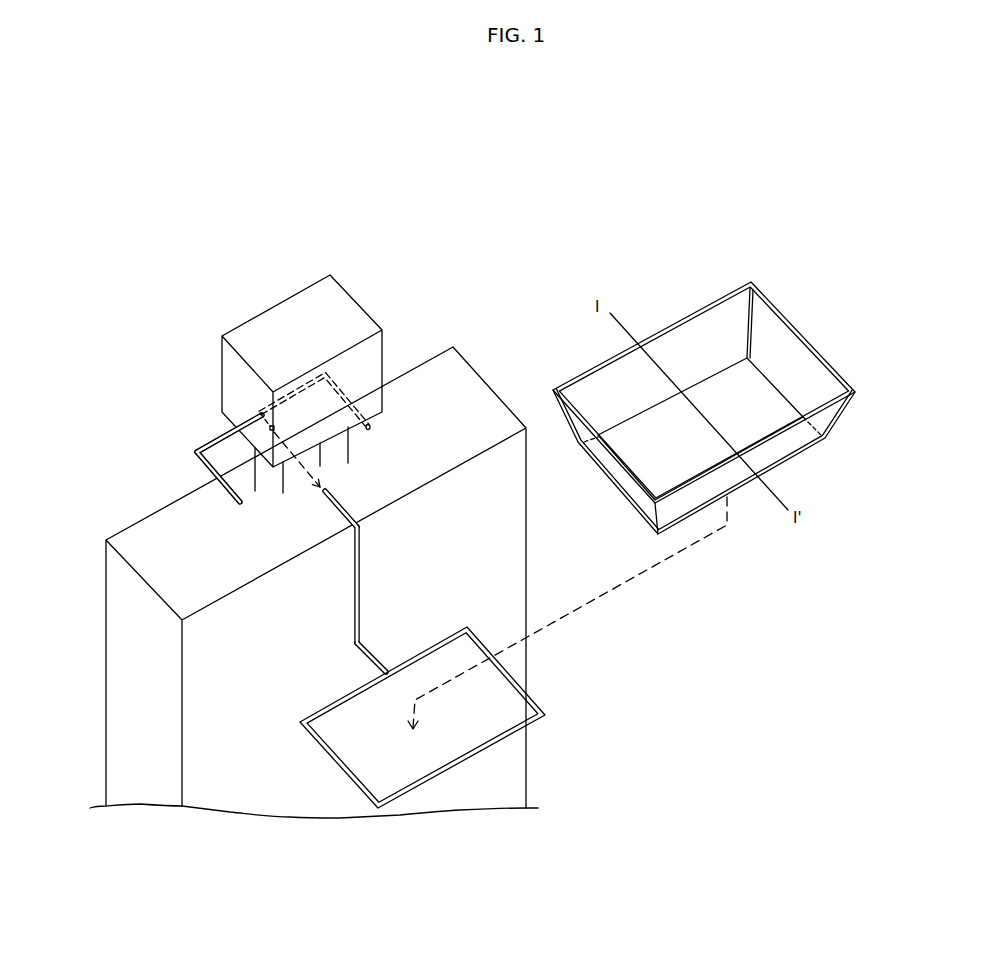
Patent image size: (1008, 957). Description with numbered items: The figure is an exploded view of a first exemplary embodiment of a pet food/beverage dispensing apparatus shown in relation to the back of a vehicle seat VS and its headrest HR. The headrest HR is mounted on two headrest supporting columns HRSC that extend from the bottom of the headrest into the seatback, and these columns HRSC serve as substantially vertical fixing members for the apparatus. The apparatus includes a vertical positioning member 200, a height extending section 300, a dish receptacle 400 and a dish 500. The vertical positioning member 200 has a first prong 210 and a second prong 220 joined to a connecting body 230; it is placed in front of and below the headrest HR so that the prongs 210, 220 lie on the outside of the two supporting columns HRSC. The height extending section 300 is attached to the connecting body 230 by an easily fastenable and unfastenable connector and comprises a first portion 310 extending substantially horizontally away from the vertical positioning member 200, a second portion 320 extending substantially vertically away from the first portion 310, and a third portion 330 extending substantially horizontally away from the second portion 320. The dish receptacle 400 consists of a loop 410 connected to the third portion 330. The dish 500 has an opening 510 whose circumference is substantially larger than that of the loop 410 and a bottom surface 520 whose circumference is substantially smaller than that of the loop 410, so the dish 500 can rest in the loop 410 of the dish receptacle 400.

The headrest HR is at (222, 386).
The vertical positioning member 200 is at (222, 386).
The headrest supporting columns HRSC is at (255, 490).
The first prong 210 is at (205, 462).
The second prong 220 is at (347, 397).
The connecting body 230 is at (202, 445).
The vehicle seat VS is at (432, 357).
The height extending section 300 is at (199, 581).
The first portion 310 is at (338, 510).
The second portion 320 is at (353, 595).
The third portion 330 is at (370, 667).
The dish receptacle 400 is at (485, 717).
The loop 410 is at (545, 702).
The dish 500 is at (729, 408).
The opening 510 is at (812, 377).
The bottom surface 520 is at (768, 453).